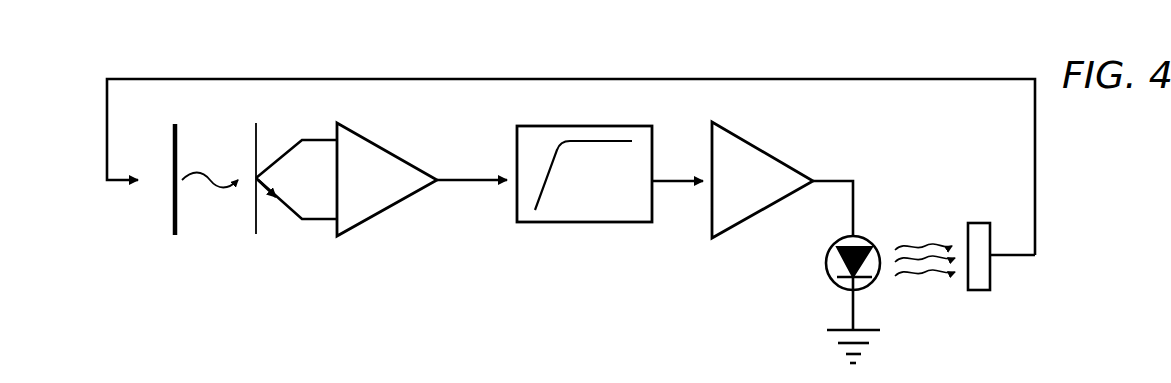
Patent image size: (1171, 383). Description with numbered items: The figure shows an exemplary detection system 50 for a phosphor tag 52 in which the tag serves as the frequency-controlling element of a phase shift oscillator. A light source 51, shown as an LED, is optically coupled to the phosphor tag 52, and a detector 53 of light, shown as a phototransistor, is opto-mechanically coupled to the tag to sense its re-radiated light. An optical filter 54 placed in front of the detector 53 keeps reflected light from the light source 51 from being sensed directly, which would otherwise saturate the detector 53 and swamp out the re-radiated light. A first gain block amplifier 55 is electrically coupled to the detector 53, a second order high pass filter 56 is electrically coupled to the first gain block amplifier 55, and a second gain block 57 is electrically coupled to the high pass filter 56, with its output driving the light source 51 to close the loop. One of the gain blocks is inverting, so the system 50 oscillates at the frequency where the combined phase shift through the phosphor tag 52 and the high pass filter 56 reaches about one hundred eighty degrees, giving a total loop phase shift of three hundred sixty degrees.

The system 50 is at (262, 45).
The light source 51 is at (868, 237).
The phosphor tag 52 is at (990, 232).
The detector 53 is at (258, 223).
The optical filter 54 is at (175, 210).
The first gain block amplifier 55 is at (422, 179).
The second order high pass filter 56 is at (610, 191).
The second gain block 57 is at (782, 180).